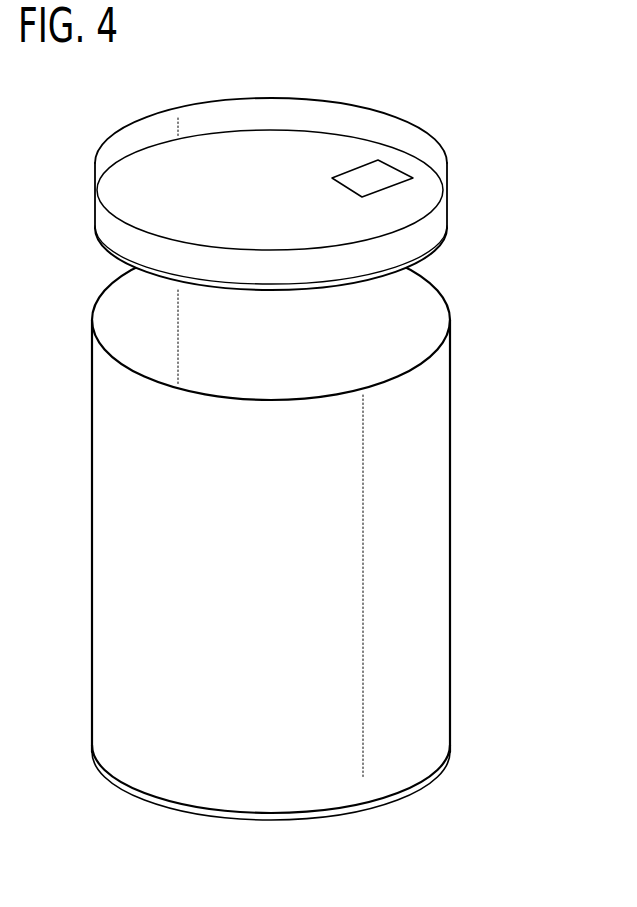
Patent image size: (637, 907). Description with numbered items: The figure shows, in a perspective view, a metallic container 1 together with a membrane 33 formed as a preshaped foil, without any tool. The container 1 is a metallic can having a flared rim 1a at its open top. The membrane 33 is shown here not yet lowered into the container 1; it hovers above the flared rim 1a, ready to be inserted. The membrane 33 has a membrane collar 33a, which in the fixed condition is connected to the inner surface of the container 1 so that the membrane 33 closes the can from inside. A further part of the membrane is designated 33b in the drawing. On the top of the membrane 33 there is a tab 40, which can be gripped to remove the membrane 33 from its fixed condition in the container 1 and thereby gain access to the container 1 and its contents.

The container 1 is at (299, 530).
The flared rim 1a is at (122, 354).
The membrane 33 is at (308, 173).
The membrane collar 33a is at (441, 210).
The cap rim / top face 33b is at (129, 177).
The tab 40 is at (354, 177).